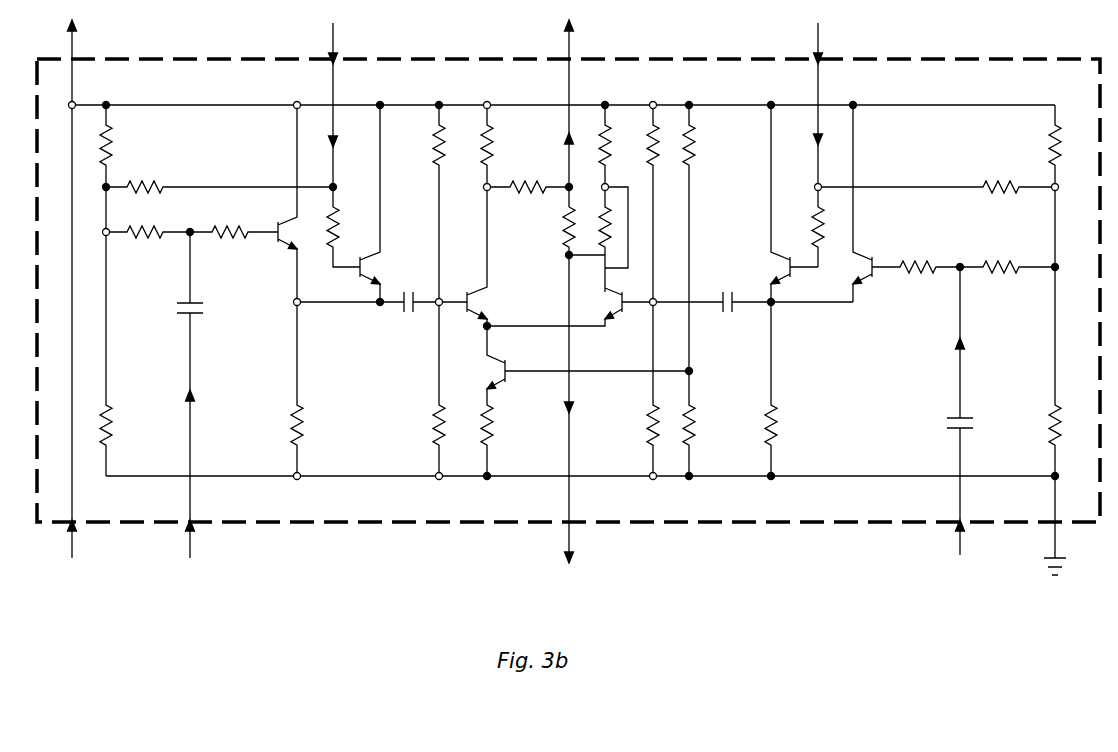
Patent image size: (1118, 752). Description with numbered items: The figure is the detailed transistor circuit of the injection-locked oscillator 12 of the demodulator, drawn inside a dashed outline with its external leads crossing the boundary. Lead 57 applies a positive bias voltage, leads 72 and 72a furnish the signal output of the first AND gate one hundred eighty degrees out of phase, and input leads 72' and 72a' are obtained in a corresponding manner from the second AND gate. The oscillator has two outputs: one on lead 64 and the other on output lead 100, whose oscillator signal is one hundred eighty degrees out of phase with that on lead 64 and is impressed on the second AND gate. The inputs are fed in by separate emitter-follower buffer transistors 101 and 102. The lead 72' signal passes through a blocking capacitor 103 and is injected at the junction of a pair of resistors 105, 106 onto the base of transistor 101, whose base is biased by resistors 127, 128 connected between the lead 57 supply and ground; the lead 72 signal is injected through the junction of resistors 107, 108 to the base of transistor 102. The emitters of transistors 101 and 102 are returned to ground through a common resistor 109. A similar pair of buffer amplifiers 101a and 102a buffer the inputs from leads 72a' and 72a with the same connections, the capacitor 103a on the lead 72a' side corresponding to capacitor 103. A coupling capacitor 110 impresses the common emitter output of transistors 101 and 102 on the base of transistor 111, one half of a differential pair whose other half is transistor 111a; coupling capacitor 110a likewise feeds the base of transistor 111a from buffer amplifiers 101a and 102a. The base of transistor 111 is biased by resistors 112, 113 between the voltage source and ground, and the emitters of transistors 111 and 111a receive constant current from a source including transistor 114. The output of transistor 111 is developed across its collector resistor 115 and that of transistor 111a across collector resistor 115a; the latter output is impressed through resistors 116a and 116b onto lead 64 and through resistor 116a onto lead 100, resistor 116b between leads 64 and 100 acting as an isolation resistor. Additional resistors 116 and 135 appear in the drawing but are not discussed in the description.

The injection-locked oscillator 12 is at (703, 58).
The lead 57 is at (74, 40).
The lead 72 is at (355, 115).
The lead 64 is at (571, 40).
The output lead 100 is at (571, 549).
The lead 72a is at (846, 115).
The input lead 72' is at (216, 437).
The input lead 72a' is at (931, 495).
The resistor 127 is at (112, 143).
The resistor 107 is at (147, 182).
The resistor 105 is at (146, 237).
The resistor 106 is at (229, 228).
The blocking capacitor 103 is at (182, 300).
The resistor 128 is at (112, 420).
The buffer transistor 101 is at (279, 240).
The common resistor 109 is at (302, 420).
The resistor 108 is at (340, 226).
The buffer transistor 102 is at (378, 262).
The coupling capacitor 110 is at (398, 313).
The resistor 112 is at (436, 142).
The resistor 113 is at (436, 420).
The collector resistor 115 is at (495, 142).
The resistor 116 is at (528, 182).
The isolation resistor 116b is at (565, 225).
The collector resistor 115a is at (612, 146).
The resistor 116a is at (592, 244).
The resistor 135 is at (658, 146).
The transistor 111 is at (490, 299).
The transistor 111a is at (629, 315).
The transistor 114 is at (510, 358).
The coupling capacitor 110a is at (738, 313).
The buffer amplifier 102a is at (783, 262).
The buffer amplifier 101a is at (883, 260).
The capacitor 103a is at (945, 420).